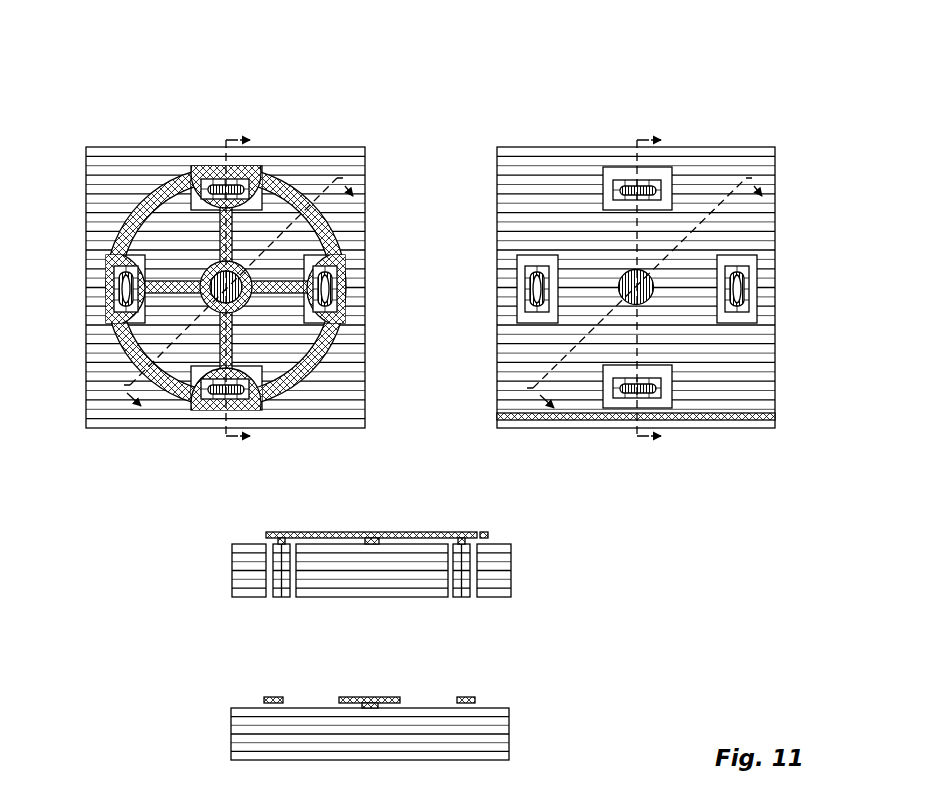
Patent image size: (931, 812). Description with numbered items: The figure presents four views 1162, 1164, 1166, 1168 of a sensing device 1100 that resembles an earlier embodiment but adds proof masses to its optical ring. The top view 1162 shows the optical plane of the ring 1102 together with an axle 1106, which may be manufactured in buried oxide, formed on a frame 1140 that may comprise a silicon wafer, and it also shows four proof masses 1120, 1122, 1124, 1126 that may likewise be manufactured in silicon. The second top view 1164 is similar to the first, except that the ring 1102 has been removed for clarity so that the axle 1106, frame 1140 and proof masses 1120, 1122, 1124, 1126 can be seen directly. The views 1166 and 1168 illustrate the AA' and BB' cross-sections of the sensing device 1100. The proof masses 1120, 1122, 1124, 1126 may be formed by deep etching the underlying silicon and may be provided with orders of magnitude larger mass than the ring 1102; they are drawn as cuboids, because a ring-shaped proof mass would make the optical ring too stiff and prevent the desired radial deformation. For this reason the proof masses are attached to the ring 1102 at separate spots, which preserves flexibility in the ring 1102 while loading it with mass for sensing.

The sensing device 1100 is at (328, 227).
The ring 1102 is at (300, 195).
The axle 1106 is at (203, 303).
The proof mass 1120 is at (197, 403).
The proof mass 1122 is at (347, 318).
The proof mass 1124 is at (196, 170).
The proof mass 1126 is at (97, 293).
The frame 1140 is at (86, 205).
The top view 1162 is at (199, 68).
The top view 1164 is at (671, 98).
The cross-section view 1166 is at (557, 553).
The cross-section view 1168 is at (544, 725).